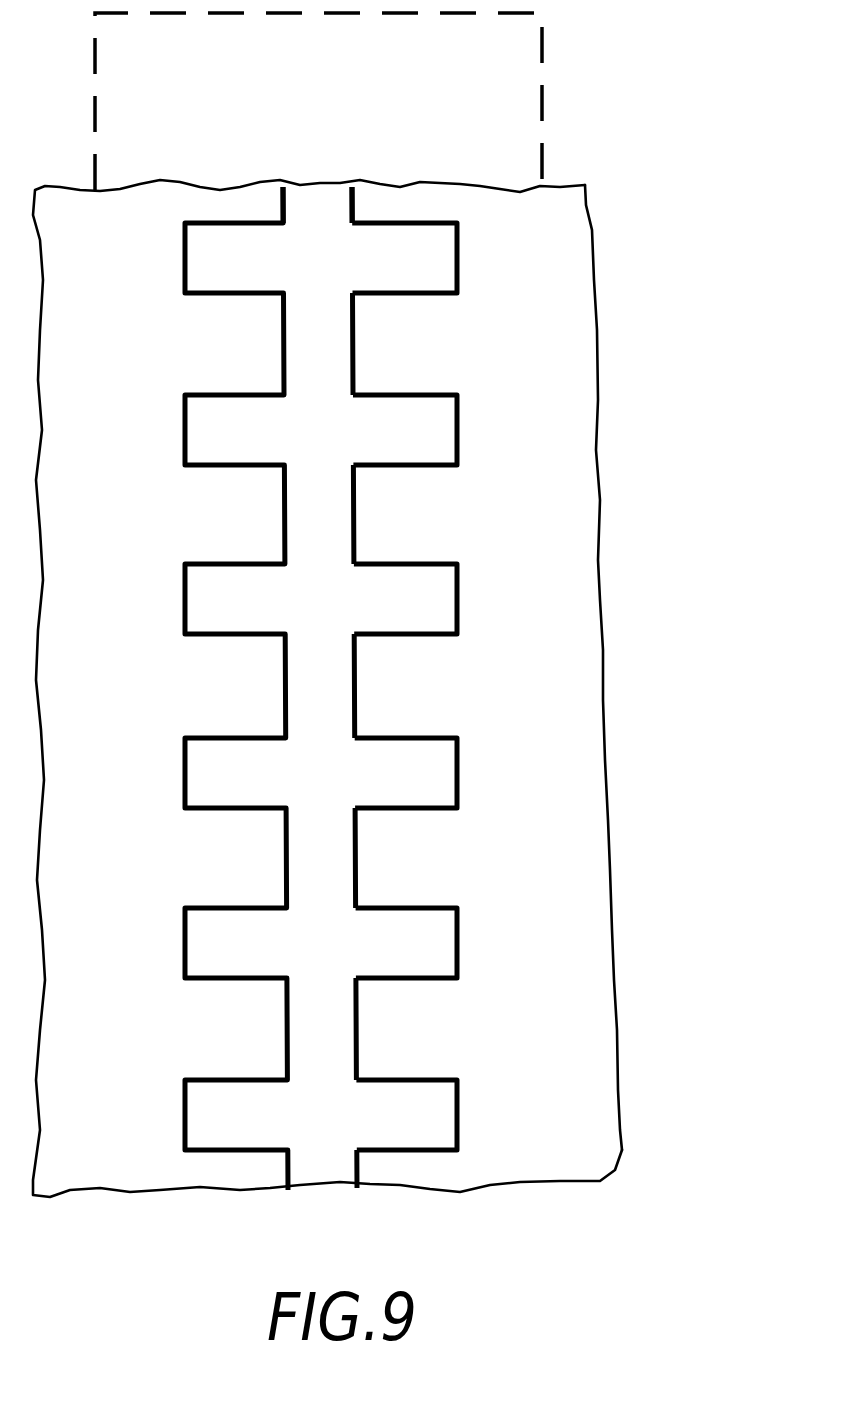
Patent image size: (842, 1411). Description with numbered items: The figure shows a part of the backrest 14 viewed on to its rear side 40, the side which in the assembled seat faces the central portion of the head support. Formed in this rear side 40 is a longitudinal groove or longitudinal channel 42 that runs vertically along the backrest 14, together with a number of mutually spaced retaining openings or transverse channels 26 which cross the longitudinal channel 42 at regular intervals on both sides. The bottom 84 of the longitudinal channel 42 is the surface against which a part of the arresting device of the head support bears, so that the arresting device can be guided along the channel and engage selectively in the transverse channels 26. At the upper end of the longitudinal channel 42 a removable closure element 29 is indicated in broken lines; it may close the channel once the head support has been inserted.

The backrest 14 is at (582, 226).
The transverse channels 26 is at (400, 417).
The removable closure element 29 is at (517, 141).
The rear side 40 is at (563, 704).
The longitudinal channel 42 is at (318, 205).
The bottom of the longitudinal channel 84 is at (320, 345).